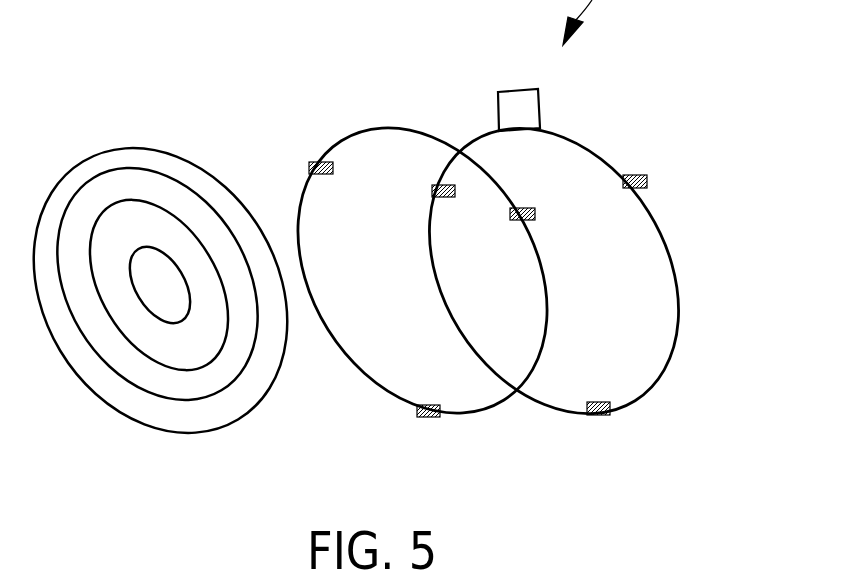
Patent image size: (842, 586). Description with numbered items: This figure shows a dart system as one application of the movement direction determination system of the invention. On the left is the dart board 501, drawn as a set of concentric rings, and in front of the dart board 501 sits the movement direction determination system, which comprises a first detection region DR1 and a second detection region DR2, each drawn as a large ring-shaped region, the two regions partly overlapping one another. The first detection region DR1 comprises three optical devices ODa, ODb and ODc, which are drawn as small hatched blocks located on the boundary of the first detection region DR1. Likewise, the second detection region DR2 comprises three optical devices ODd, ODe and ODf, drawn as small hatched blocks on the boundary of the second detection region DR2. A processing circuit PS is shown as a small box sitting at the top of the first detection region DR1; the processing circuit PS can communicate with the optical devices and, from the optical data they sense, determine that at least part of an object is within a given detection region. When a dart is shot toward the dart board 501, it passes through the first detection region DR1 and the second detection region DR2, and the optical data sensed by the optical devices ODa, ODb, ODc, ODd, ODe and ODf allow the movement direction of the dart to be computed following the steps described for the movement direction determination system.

The dart board 501 is at (163, 152).
The first detection region DR1 is at (580, 133).
The second detection region DR2 is at (388, 128).
The processing circuit PS is at (519, 110).
The optical device ODa is at (647, 182).
The optical device ODb is at (610, 410).
The optical device ODc is at (453, 185).
The optical device ODd is at (318, 162).
The optical device ODe is at (535, 214).
The optical device ODf is at (428, 417).